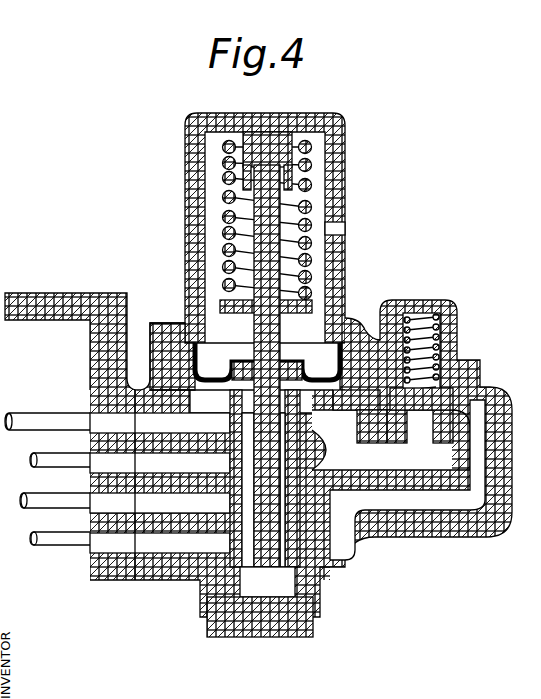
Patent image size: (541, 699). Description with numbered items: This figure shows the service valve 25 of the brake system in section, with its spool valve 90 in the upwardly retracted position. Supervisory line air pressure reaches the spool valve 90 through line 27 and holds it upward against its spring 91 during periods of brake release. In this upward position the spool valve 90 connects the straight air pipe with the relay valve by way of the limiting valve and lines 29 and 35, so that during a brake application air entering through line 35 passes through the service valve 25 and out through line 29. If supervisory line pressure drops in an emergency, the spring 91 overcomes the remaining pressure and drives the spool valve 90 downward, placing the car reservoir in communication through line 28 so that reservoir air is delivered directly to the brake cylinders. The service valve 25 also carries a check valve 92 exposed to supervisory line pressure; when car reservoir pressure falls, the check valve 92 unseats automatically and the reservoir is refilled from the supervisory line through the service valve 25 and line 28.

The service valve 25 is at (367, 199).
The line 27 is at (52, 420).
The line 28 is at (43, 533).
The line 29 is at (48, 494).
The line 35 is at (50, 457).
The spool valve 90 is at (310, 470).
The spring 91 is at (311, 260).
The check valve 92 is at (471, 376).